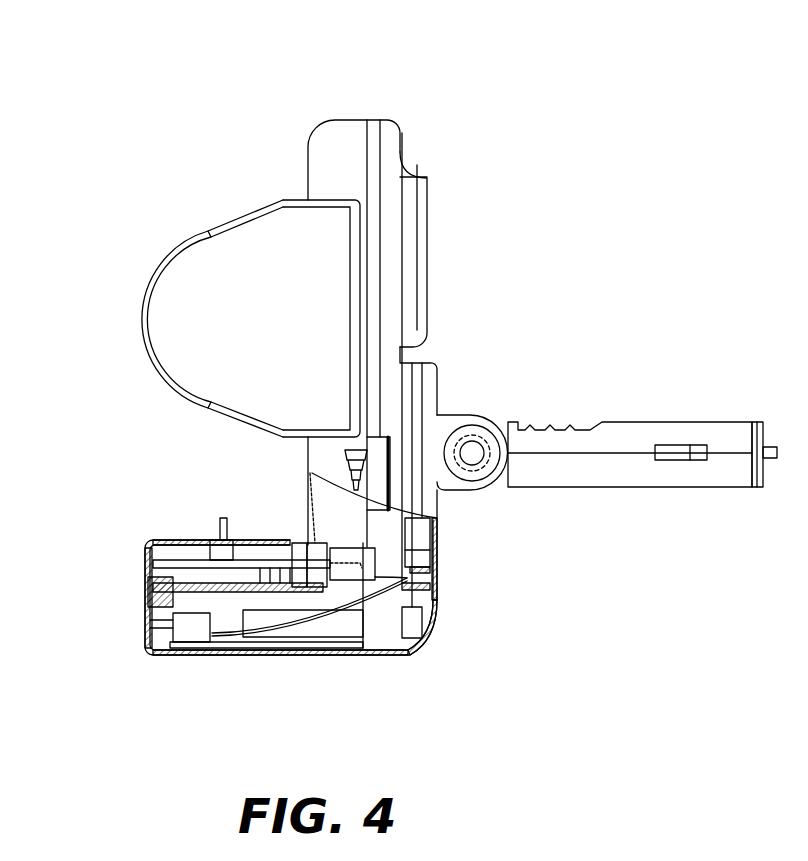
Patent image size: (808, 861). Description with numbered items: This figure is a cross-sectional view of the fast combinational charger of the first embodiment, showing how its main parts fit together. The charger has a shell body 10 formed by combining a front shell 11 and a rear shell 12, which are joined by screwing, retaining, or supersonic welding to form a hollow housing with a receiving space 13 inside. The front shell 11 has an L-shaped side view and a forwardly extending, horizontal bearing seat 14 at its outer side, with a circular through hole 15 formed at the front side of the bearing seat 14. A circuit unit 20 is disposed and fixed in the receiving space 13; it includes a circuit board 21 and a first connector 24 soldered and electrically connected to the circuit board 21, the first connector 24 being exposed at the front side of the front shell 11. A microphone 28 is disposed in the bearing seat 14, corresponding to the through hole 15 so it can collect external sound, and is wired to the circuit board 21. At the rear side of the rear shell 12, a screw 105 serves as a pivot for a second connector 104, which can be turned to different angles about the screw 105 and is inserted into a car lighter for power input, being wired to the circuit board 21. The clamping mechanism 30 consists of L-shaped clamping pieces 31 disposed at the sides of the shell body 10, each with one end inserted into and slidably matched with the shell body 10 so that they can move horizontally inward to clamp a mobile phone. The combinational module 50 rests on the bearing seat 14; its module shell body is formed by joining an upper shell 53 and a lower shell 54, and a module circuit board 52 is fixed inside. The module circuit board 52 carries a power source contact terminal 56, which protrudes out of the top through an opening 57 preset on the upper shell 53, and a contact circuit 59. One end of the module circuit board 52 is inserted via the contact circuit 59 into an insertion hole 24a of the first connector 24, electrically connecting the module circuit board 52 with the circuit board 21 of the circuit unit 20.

The shell body 10 is at (360, 107).
The front shell 11 is at (335, 145).
The rear shell 12 is at (392, 177).
The receiving space 13 is at (448, 528).
The bearing seat 14 is at (212, 657).
The through hole 15 is at (165, 645).
The circuit unit 20 is at (395, 536).
The circuit board 21 is at (437, 550).
The first connector 24 is at (428, 600).
The insertion hole 24a is at (395, 585).
The microphone 28 is at (180, 628).
The clamping mechanism 30 is at (160, 248).
The clamping piece 31 is at (175, 317).
The combinational module 50 is at (145, 580).
The module circuit board 52 is at (255, 560).
The upper shell 53 is at (190, 545).
The lower shell 54 is at (240, 612).
The power source contact terminal 56 is at (222, 525).
The opening 57 is at (258, 545).
The contact circuit 59 is at (372, 582).
The second connector 104 is at (635, 430).
The screw 105 is at (467, 448).